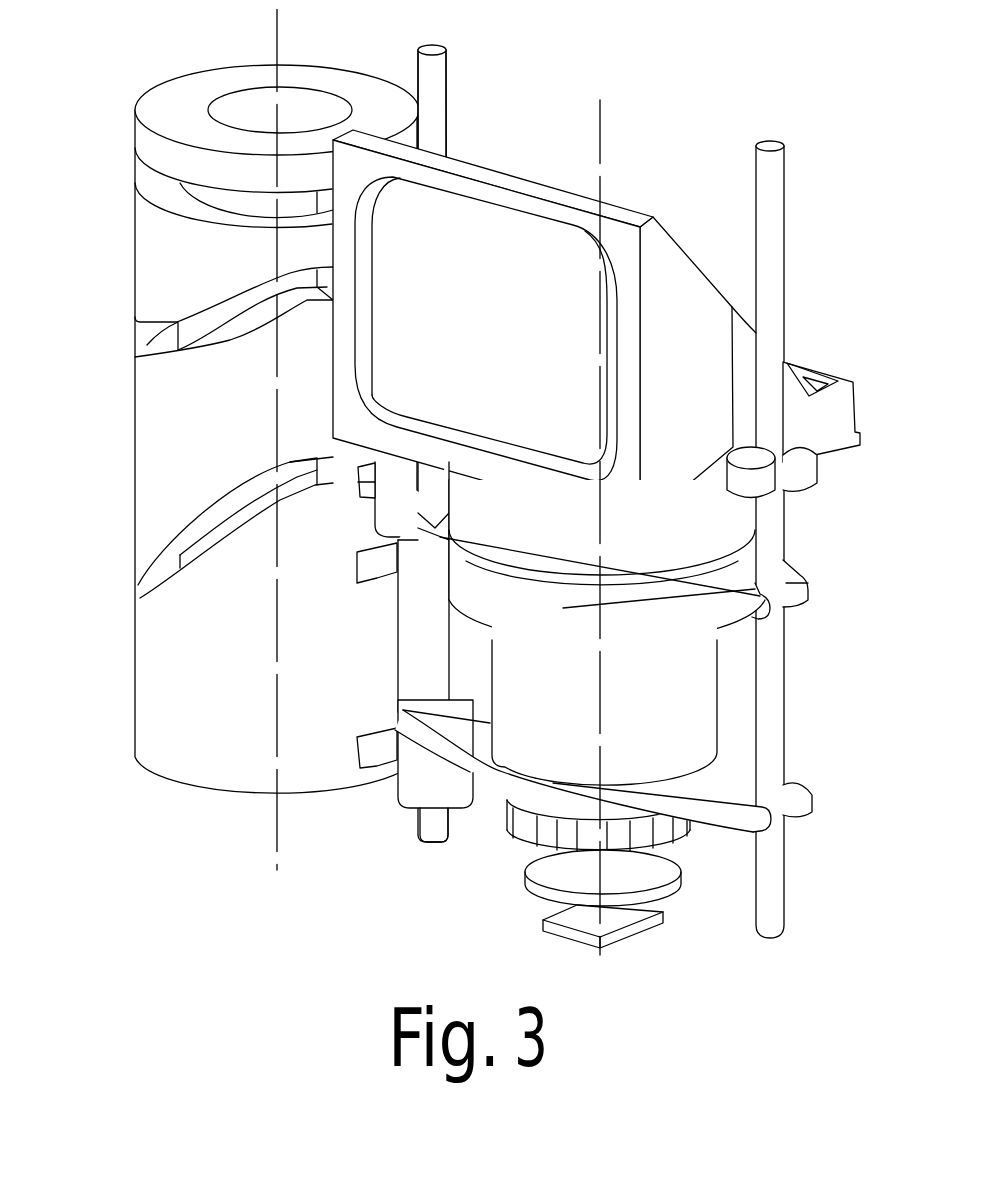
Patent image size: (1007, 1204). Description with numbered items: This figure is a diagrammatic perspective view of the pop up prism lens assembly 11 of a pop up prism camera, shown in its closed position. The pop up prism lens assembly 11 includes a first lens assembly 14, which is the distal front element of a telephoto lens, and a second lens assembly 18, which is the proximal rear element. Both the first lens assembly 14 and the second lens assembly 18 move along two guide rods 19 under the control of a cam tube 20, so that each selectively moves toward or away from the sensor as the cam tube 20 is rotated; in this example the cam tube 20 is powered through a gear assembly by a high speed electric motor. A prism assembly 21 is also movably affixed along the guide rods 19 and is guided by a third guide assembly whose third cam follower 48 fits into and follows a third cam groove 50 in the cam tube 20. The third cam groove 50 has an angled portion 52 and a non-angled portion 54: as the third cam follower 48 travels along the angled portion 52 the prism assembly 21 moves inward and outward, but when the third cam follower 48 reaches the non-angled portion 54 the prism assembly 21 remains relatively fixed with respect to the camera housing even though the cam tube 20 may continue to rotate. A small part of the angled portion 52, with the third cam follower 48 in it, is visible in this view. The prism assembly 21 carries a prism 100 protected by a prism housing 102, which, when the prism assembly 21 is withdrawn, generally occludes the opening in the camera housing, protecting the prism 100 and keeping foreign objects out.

The pop up prism lens assembly 11 is at (468, 477).
The first lens assembly 14 is at (692, 532).
The second lens assembly 18 is at (656, 733).
The guide rods 19 is at (433, 82).
The cam tube 20 is at (254, 425).
The prism assembly 21 is at (493, 302).
The third cam follower 48 is at (362, 495).
The third cam groove 50 is at (160, 184).
The angled portion 52 is at (357, 472).
The non-angled portion 54 is at (222, 197).
The prism 100 is at (501, 341).
The prism housing 102 is at (665, 267).